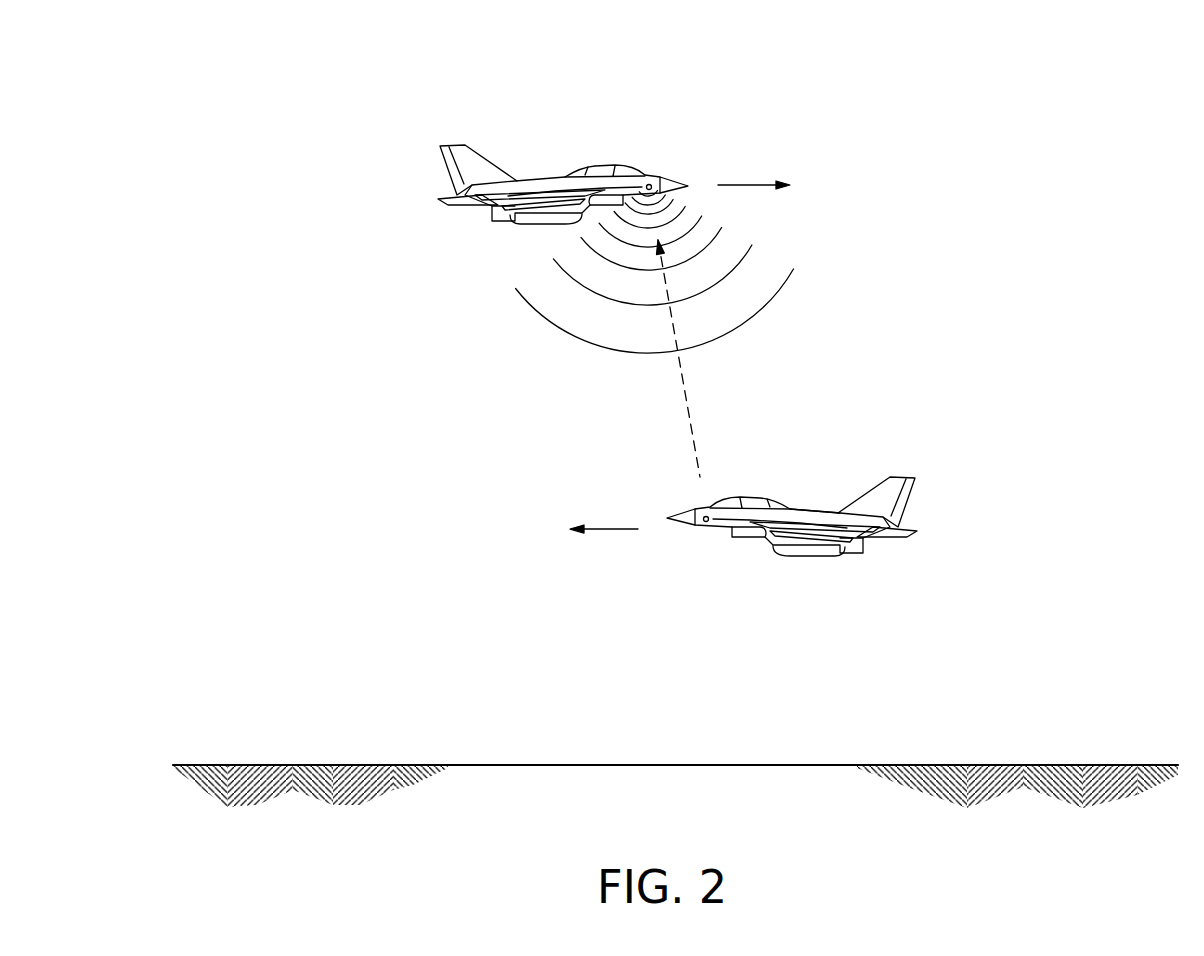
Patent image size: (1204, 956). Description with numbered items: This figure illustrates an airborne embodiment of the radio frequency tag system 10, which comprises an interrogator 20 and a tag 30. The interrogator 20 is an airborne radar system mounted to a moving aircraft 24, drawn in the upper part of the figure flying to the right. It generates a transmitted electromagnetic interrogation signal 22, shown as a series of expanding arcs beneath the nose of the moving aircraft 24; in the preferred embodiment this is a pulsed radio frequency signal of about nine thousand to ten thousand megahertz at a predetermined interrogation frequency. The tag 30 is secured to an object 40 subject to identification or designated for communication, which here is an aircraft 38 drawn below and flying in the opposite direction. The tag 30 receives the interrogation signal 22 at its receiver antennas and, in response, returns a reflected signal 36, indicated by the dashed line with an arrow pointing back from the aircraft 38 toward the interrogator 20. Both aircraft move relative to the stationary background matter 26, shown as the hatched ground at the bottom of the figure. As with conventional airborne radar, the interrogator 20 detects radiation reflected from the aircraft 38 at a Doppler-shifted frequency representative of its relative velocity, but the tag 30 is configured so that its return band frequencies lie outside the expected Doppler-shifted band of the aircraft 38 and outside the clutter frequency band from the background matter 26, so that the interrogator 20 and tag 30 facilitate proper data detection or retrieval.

The radio frequency tag system 10 is at (1038, 148).
The interrogator 20 is at (545, 125).
The electromagnetic interrogation signal 22 is at (780, 288).
The moving aircraft 24 is at (438, 147).
The stationary background matter 26 is at (948, 767).
The tag 30 is at (814, 554).
The reflected signal 36 is at (685, 413).
The aircraft 38 is at (910, 493).
The object 40 is at (805, 510).